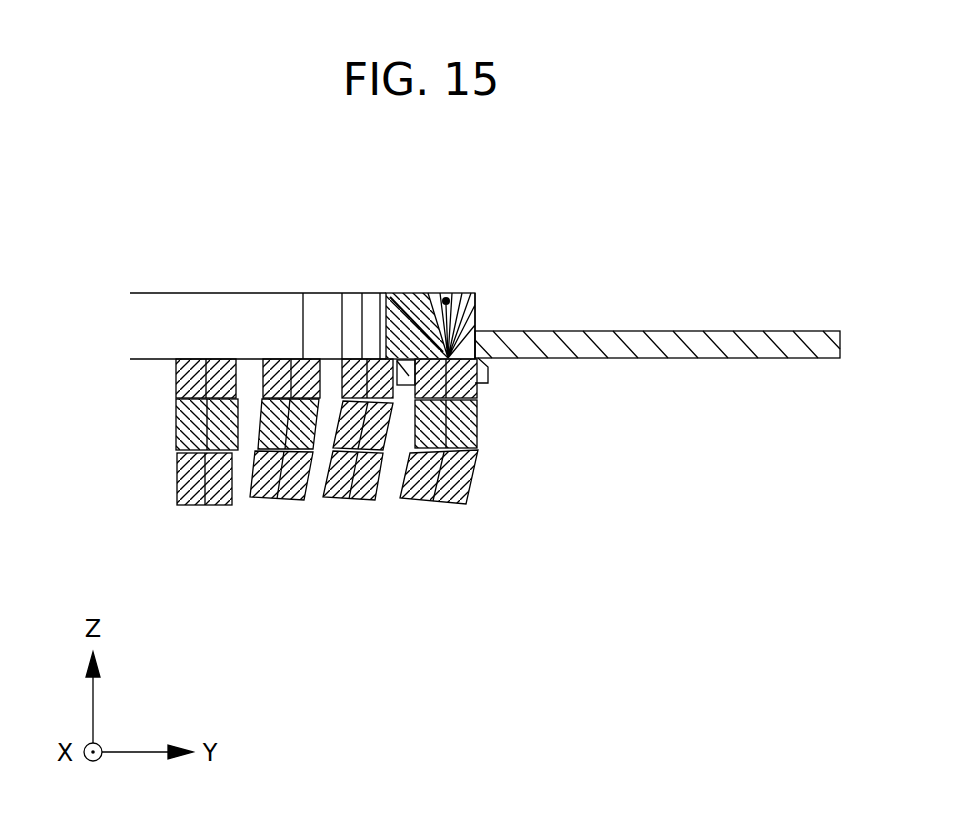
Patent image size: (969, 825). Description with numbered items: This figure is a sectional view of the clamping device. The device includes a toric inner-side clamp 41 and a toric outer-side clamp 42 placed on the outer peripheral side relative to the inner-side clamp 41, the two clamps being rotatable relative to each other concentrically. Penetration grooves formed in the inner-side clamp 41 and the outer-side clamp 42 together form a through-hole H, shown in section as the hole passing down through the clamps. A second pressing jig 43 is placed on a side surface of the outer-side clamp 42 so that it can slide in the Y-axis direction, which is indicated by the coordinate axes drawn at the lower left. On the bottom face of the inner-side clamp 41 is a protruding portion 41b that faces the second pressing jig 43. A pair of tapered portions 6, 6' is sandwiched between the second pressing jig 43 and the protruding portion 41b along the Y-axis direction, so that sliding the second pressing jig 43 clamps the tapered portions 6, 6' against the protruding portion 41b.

The inner-side clamp 41 is at (410, 300).
The protruding portion 41b is at (410, 370).
The through-hole H is at (446, 297).
The outer-side clamp 42 is at (470, 296).
The second pressing jig 43 is at (672, 343).
The tapered portion 6 is at (476, 431).
The tapered portion 6' is at (368, 458).